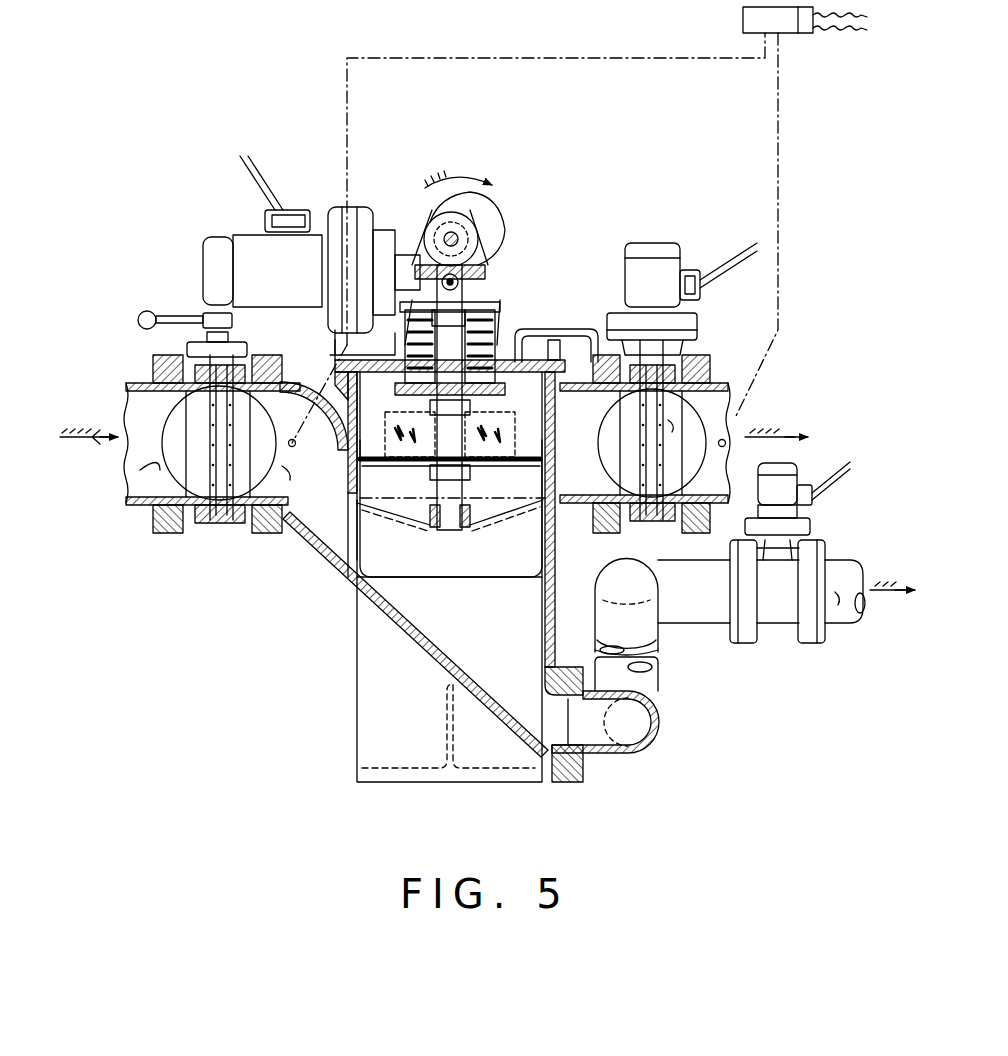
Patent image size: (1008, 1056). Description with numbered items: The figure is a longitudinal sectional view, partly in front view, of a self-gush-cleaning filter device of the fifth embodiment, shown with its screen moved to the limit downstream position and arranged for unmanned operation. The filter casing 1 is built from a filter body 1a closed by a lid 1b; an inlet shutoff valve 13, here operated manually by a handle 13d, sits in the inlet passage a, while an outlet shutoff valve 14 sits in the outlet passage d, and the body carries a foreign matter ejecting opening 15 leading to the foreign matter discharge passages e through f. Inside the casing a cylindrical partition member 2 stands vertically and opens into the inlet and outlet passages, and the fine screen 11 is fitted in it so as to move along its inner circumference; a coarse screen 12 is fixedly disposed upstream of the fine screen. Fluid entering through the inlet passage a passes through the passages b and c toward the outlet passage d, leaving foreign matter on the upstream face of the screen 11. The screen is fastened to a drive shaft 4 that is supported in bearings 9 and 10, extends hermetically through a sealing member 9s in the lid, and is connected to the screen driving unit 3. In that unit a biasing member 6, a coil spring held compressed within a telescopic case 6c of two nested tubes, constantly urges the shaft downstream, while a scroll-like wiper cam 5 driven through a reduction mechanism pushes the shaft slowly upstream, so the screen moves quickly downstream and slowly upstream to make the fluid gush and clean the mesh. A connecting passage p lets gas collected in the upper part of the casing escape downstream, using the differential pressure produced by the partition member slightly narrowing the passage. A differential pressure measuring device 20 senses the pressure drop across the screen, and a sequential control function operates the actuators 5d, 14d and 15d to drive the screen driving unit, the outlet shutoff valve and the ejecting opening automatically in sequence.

The filter casing 1 is at (337, 585).
The filter body 1a is at (355, 522).
The lid 1b is at (343, 352).
The partition member 2 is at (345, 508).
The screen driving unit 3 is at (500, 185).
The drive shaft 4 is at (457, 335).
The wiper cam 5 is at (430, 200).
The actuator 5d is at (273, 270).
The biasing member 6 is at (493, 322).
The case 6c is at (523, 337).
The bearing 9 is at (550, 332).
The sealing member 9s is at (670, 263).
The connecting passage p is at (647, 285).
The bearing 10 is at (430, 530).
The screen 11 is at (517, 443).
The coarse screen 12 is at (380, 513).
The inlet shutoff valve 13 is at (185, 432).
The handle 13d is at (178, 320).
The outlet shutoff valve 14 is at (577, 428).
The actuator 14d is at (677, 268).
The foreign matter ejecting opening 15 is at (778, 597).
The actuator 15d is at (785, 490).
The differential pressure measuring device 20 is at (783, 22).
The inlet passage a is at (160, 472).
The passage b is at (285, 470).
The passage c is at (673, 423).
The outlet passage d is at (724, 441).
The foreign matter discharge passage e is at (630, 722).
The foreign matter discharge passage f is at (838, 597).